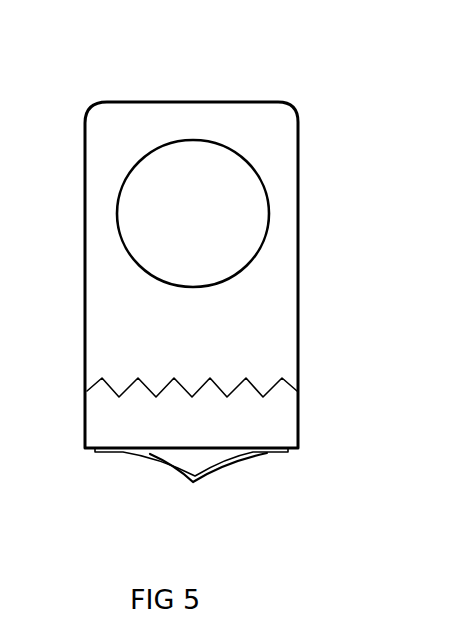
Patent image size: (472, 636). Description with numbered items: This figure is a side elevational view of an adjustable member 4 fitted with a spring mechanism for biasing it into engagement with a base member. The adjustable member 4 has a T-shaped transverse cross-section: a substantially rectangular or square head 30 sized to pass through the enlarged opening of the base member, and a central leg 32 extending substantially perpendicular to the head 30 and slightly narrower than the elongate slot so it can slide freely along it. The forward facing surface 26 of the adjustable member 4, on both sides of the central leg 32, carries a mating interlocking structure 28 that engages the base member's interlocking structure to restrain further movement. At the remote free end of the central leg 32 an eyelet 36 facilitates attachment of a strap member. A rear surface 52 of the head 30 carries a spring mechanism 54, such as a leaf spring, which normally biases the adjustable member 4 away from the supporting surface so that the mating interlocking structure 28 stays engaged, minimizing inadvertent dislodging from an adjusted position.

The adjustable member 4 is at (251, 86).
The forward facing surface 26 is at (128, 388).
The mating interlocking structure 28 is at (270, 393).
The head 30 is at (238, 410).
The central leg 32 is at (277, 255).
The eyelet 36 is at (170, 172).
The rear surface 52 is at (177, 450).
The spring mechanism 54 is at (215, 475).